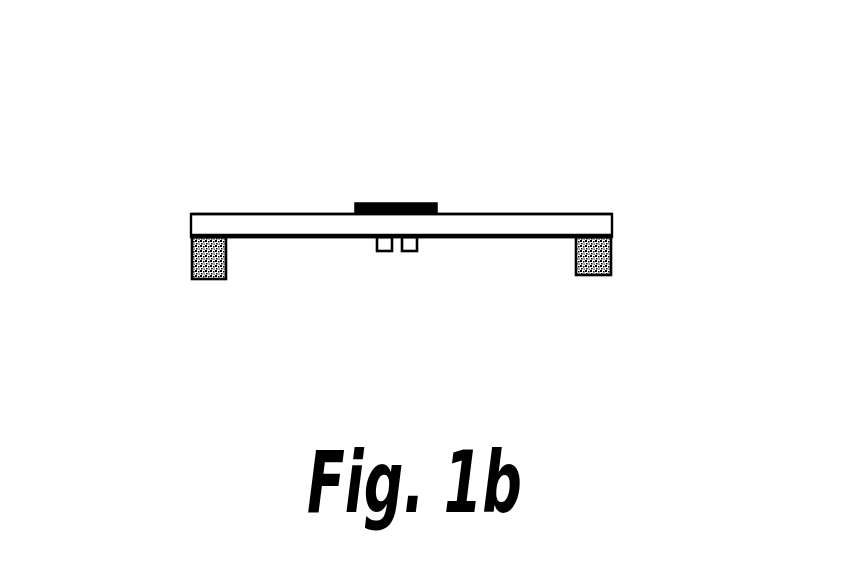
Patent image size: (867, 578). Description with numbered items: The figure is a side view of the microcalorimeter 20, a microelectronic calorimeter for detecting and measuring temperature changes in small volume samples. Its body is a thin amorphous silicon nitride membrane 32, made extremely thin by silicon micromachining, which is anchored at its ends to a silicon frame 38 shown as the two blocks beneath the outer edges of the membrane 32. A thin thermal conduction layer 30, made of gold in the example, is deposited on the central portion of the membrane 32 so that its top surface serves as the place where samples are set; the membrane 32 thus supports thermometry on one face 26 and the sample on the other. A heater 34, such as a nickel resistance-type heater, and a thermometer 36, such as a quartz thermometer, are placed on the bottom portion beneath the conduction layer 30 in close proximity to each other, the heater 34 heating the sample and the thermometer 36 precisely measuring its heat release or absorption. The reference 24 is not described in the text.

The microcalorimeter 20 is at (422, 56).
The circuit board 24 is at (280, 202).
The face of the membrane 26 is at (530, 247).
The thermal conduction layer 30 is at (437, 207).
The membrane 32 is at (202, 222).
The heater 34 is at (377, 249).
The thermometer 36 is at (417, 249).
The silicon frame 38 is at (192, 275).